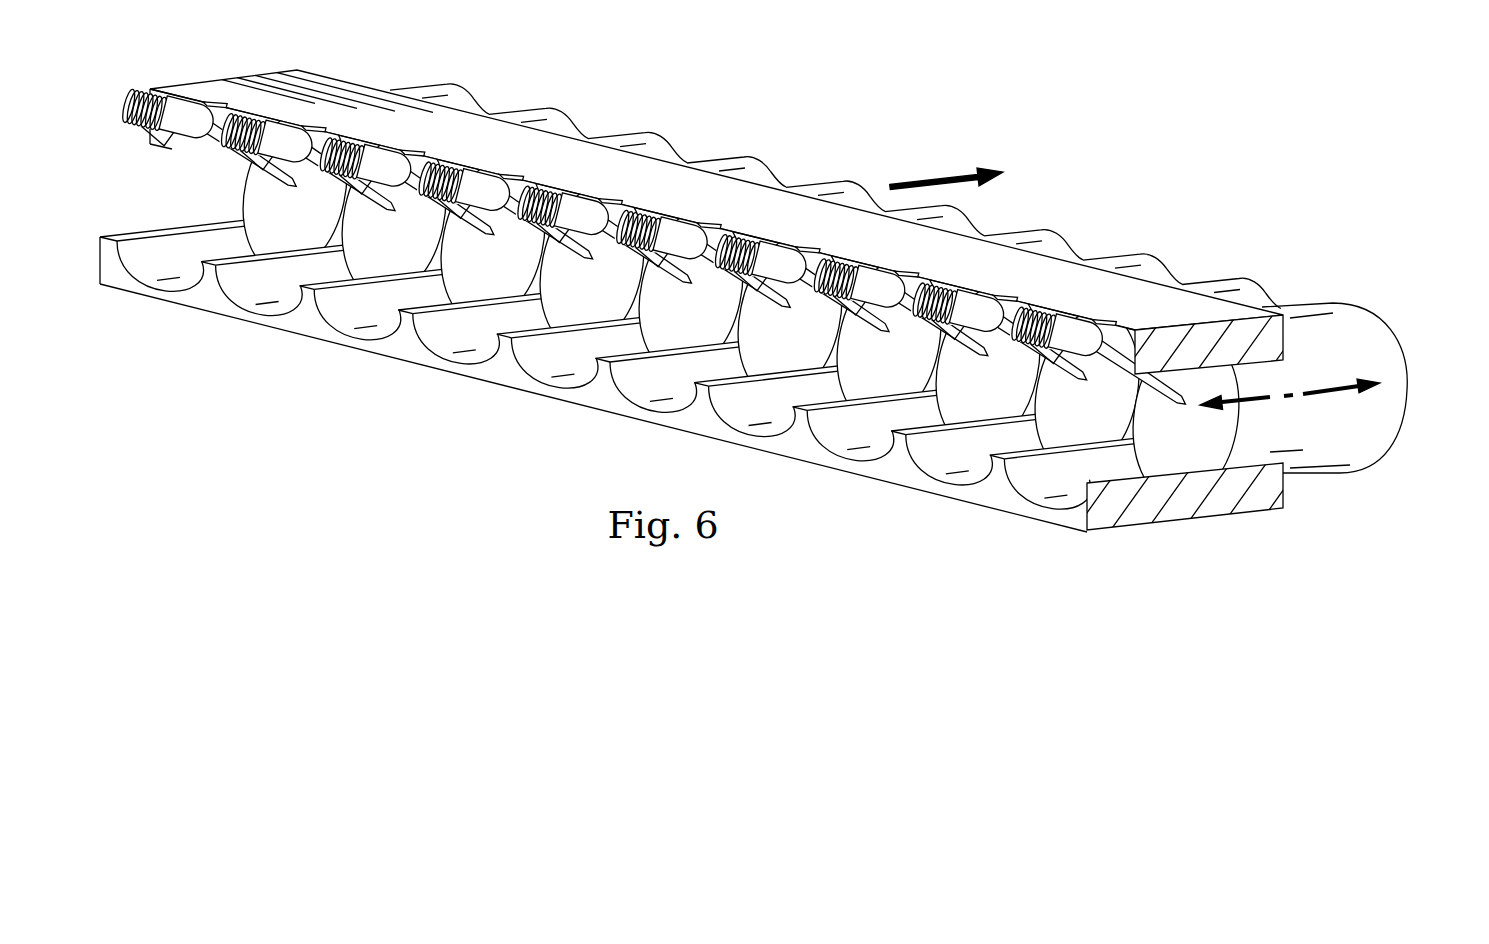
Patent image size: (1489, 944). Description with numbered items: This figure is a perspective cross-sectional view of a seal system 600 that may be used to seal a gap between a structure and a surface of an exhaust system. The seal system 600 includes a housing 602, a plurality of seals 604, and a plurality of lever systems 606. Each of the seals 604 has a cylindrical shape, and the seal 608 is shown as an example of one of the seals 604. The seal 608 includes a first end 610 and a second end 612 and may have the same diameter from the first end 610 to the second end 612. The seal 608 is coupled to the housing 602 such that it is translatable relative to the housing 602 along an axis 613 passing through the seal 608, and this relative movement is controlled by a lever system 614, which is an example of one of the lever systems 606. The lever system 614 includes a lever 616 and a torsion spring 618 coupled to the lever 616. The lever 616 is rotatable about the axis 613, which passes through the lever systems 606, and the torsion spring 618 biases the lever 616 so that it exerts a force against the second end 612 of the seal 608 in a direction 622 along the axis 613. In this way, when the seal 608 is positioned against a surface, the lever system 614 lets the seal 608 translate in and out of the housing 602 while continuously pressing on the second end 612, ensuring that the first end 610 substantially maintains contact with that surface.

The seal system 600 is at (785, 297).
The housing 602 is at (498, 397).
The seals 604 is at (1182, 249).
The lever systems 606 is at (199, 164).
The seal 608 is at (466, 86).
The first end 610 is at (1399, 459).
The second end 612 is at (1181, 466).
The axis 613 is at (1323, 395).
The lever system 614 is at (1086, 296).
The lever 616 is at (913, 333).
The torsion spring 618 is at (596, 229).
The direction 622 is at (937, 172).